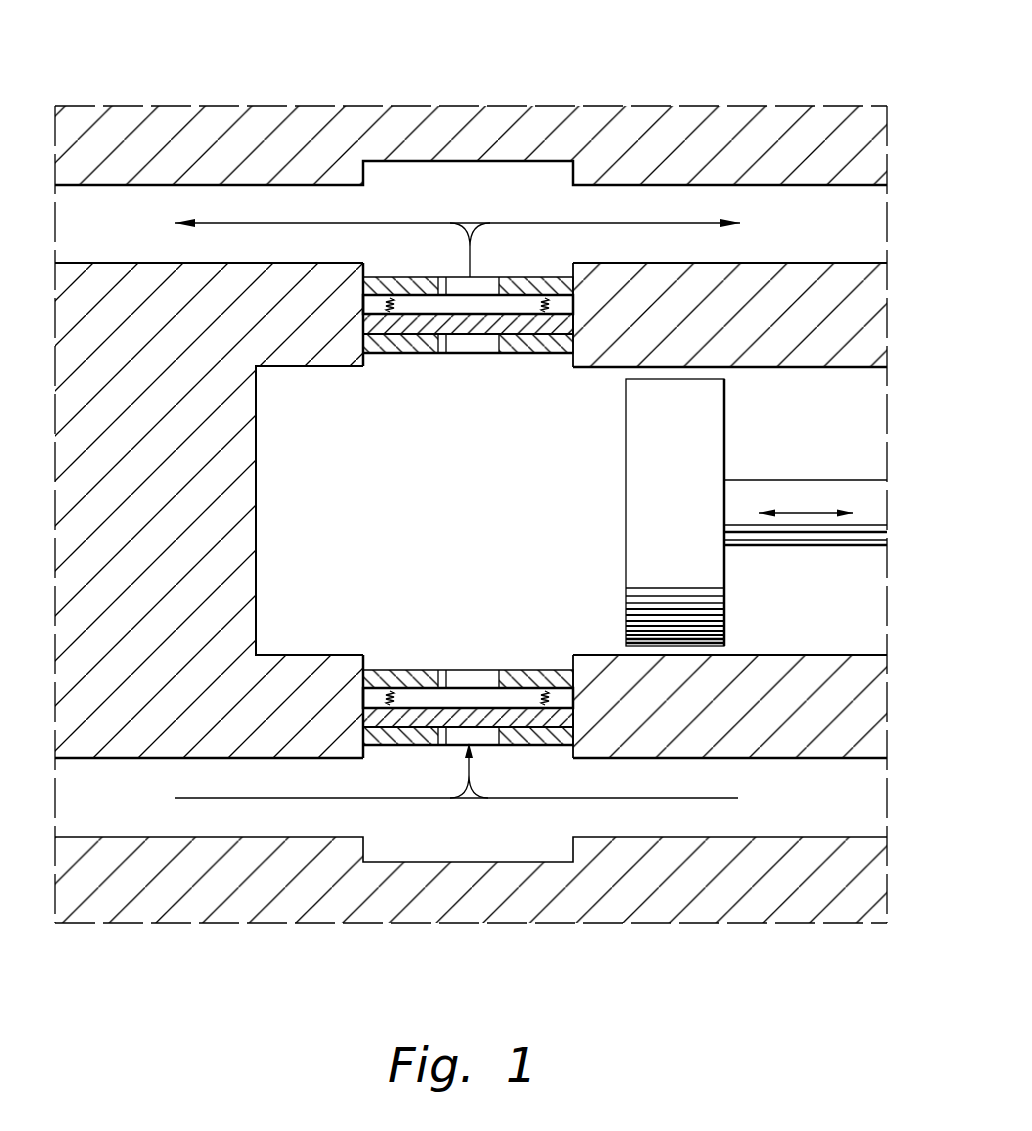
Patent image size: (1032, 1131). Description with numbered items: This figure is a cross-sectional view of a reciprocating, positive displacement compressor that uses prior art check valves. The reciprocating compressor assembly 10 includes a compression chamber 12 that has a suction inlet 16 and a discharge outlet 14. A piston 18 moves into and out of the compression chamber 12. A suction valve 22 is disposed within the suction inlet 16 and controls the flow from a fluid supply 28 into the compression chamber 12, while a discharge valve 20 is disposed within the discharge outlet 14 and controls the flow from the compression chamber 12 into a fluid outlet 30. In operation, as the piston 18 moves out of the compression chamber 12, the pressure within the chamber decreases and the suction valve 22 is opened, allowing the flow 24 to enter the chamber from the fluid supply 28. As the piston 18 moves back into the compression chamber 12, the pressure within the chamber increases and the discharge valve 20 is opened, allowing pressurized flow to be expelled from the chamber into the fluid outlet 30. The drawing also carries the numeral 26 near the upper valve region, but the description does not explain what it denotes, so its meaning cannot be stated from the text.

The reciprocating compressor assembly 10 is at (736, 33).
The compression chamber 12 is at (452, 518).
The discharge outlet 14 is at (494, 291).
The suction inlet 16 is at (494, 735).
The piston 18 is at (643, 513).
The discharge valve 20 is at (404, 283).
The suction valve 22 is at (402, 740).
The flow 24 is at (408, 798).
The first motion direction 26 is at (408, 222).
The fluid supply 28 is at (773, 837).
The fluid outlet 30 is at (760, 186).